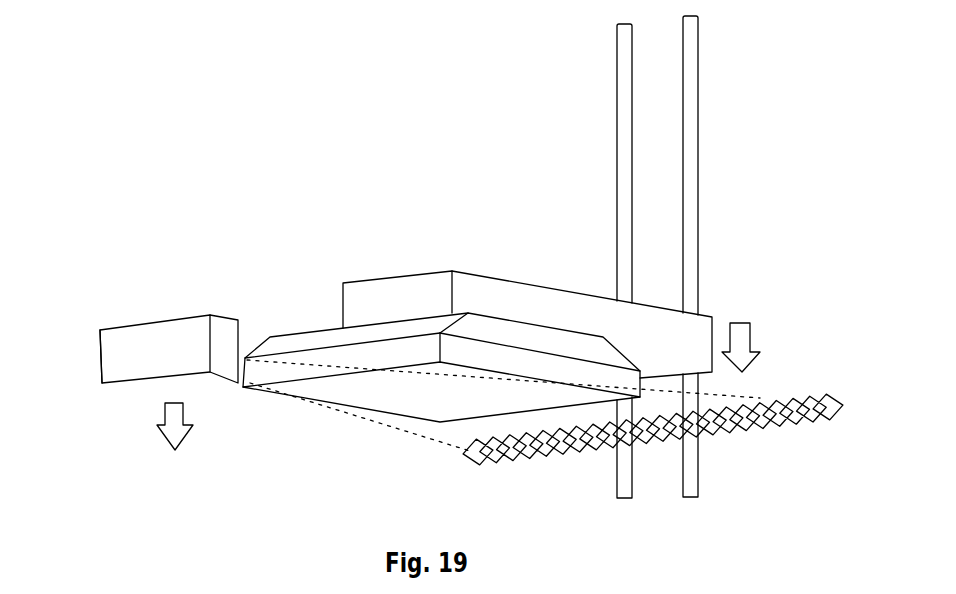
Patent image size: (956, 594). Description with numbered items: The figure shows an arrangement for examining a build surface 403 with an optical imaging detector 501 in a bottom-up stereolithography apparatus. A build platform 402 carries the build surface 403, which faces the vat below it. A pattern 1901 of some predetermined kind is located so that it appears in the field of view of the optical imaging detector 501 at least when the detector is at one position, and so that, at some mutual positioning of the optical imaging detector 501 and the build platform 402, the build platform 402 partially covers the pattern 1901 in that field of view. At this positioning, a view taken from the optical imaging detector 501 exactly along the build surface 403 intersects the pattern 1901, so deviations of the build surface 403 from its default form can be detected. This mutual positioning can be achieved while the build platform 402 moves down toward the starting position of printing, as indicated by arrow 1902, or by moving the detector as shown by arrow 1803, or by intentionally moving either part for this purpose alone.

The optical imaging detector 501 is at (168, 330).
The build platform 402 is at (299, 343).
The build surface 403 is at (378, 390).
The movement direction 1803 is at (176, 452).
The pattern 1901 is at (771, 428).
The arrow 1902 is at (740, 322).